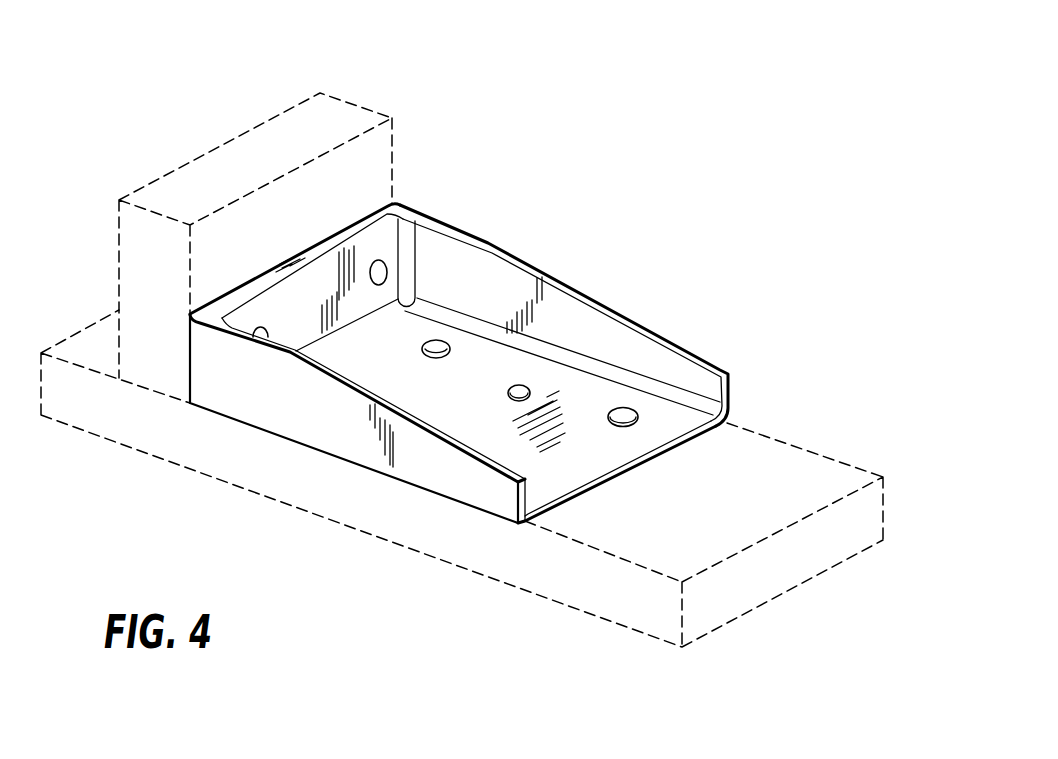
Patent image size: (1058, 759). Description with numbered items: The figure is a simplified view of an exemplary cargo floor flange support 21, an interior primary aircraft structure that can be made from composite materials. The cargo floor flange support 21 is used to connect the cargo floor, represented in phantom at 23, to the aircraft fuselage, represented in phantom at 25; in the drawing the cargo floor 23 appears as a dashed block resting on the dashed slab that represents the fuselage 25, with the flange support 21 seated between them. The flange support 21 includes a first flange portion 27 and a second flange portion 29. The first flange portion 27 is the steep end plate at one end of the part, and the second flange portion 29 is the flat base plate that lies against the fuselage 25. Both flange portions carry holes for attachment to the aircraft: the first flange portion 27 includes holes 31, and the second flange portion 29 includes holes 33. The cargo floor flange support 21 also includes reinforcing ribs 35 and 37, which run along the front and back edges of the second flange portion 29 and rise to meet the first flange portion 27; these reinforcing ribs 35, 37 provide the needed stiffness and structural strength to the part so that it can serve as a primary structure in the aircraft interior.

The cargo floor flange support 21 is at (465, 336).
The cargo floor 23 is at (336, 118).
The aircraft fuselage 25 is at (288, 478).
The first flange portion 27 is at (372, 223).
The second flange portion 29 is at (600, 456).
The holes 31 is at (382, 273).
The holes 33 is at (623, 413).
The reinforcing rib 35 is at (231, 381).
The reinforcing rib 37 is at (580, 296).